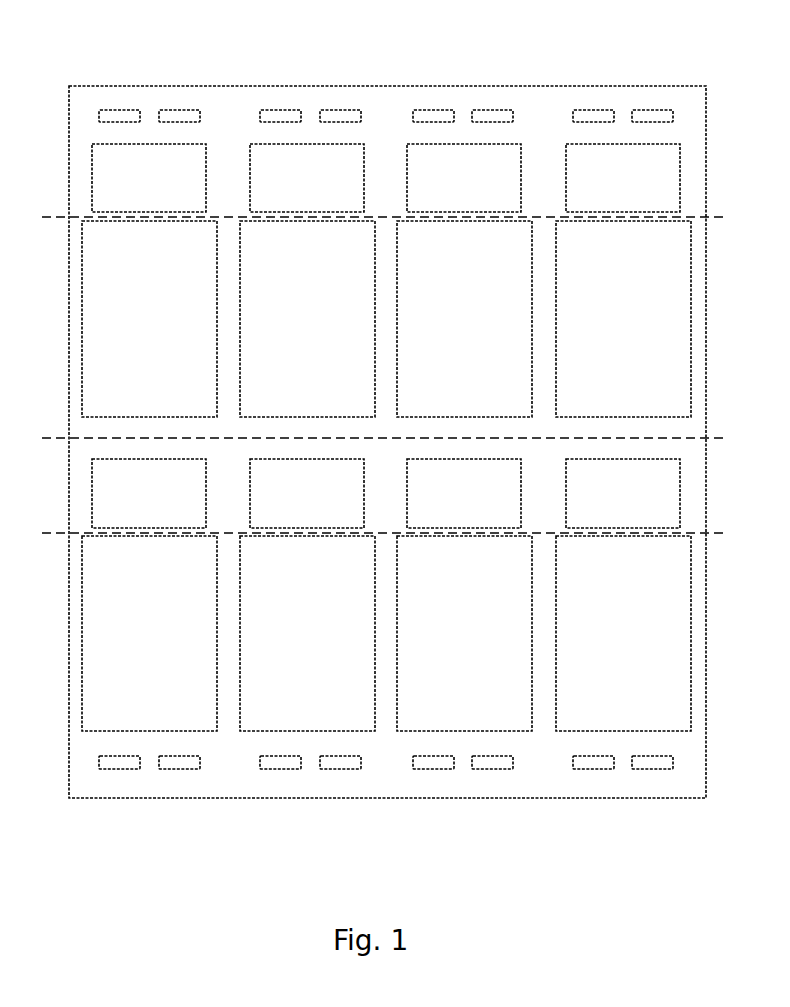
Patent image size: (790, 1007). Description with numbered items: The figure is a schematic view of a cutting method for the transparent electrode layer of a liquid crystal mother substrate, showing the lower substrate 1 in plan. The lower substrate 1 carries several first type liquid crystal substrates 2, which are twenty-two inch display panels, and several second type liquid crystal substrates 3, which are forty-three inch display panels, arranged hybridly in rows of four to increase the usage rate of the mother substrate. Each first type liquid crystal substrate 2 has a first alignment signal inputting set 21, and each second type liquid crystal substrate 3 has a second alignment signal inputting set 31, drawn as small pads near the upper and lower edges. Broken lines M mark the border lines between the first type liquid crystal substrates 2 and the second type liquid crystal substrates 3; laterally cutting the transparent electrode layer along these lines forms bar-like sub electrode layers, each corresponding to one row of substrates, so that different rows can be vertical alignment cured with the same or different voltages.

The lower substrate 1 is at (78, 100).
The first type liquid crystal substrate 2 is at (103, 166).
The second type liquid crystal substrate 3 is at (103, 312).
The first alignment signal inputting set 21 is at (121, 110).
The second alignment signal inputting set 31 is at (186, 110).
The broken line M is at (375, 377).